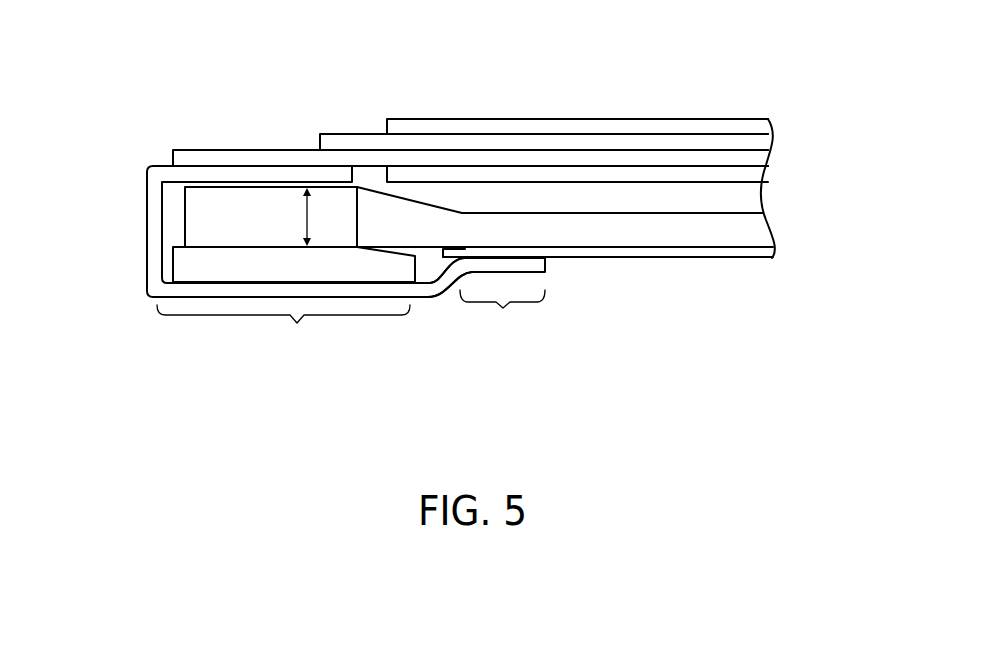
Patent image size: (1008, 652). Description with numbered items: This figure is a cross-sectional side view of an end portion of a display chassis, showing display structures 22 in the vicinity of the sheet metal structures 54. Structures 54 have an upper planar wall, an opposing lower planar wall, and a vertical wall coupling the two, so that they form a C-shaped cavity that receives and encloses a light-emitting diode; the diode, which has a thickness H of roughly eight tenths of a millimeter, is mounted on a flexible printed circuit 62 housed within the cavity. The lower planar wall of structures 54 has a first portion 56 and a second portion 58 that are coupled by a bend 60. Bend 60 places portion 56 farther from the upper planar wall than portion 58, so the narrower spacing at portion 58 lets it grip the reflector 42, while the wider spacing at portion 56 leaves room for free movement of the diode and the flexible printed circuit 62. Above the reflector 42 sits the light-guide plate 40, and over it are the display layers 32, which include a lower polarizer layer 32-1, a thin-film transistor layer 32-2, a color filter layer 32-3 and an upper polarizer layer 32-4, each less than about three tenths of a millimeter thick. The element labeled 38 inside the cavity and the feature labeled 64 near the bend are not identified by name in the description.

The display structures 22 is at (154, 85).
The display layers 32 is at (345, 110).
The lower polarizer layer 32-1 is at (752, 172).
The thin-film transistor layer 32-2 is at (713, 158).
The color filter layer 32-3 is at (650, 142).
The upper polarizer layer 32-4 is at (573, 125).
The light-guide plate 40 is at (757, 225).
The reflector 42 is at (715, 253).
The structures 54 is at (155, 203).
The light source 38 is at (183, 225).
The flexible printed circuit 62 is at (172, 268).
The first portion 56 is at (283, 330).
The second portion 58 is at (502, 315).
The bend 60 is at (429, 322).
The step 64 is at (463, 256).